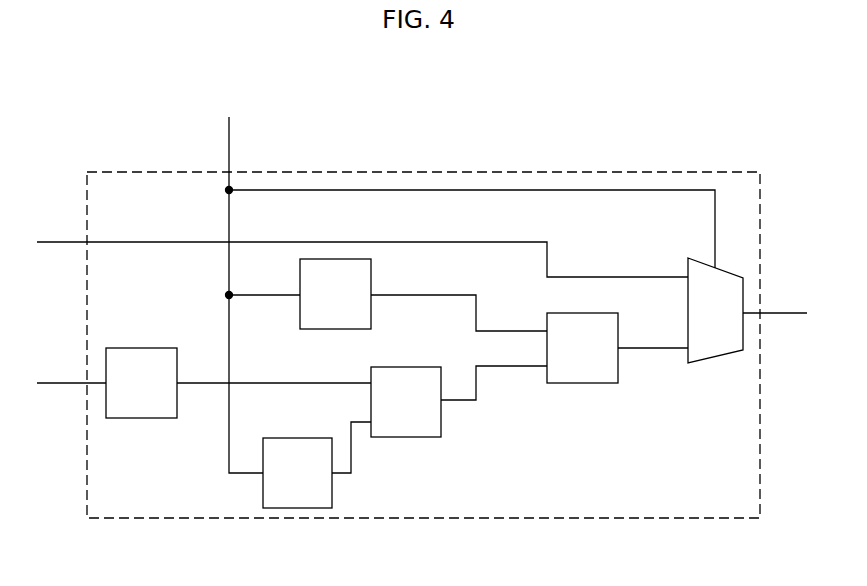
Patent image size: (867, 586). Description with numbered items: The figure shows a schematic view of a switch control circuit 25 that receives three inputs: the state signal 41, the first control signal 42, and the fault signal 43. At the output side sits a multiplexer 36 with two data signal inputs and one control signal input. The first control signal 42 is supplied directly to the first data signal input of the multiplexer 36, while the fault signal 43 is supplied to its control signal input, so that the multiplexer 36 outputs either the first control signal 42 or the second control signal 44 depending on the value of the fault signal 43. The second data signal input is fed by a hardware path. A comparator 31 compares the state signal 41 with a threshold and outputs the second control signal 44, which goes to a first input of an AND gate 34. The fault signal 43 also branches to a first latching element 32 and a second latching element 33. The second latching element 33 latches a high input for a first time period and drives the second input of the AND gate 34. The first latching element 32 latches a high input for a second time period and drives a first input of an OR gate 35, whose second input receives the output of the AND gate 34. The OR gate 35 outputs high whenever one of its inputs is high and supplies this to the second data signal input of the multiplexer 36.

The switch control circuit 25 is at (437, 172).
The comparator 31 is at (152, 393).
The first latching element 32 is at (348, 308).
The second latching element 33 is at (310, 483).
The AND gate 34 is at (417, 411).
The OR gate 35 is at (593, 358).
The multiplexer 36 is at (723, 270).
The state signal 41 is at (71, 369).
The first control signal 42 is at (422, 263).
The fault signal 43 is at (456, 295).
The second control signal 44 is at (488, 351).